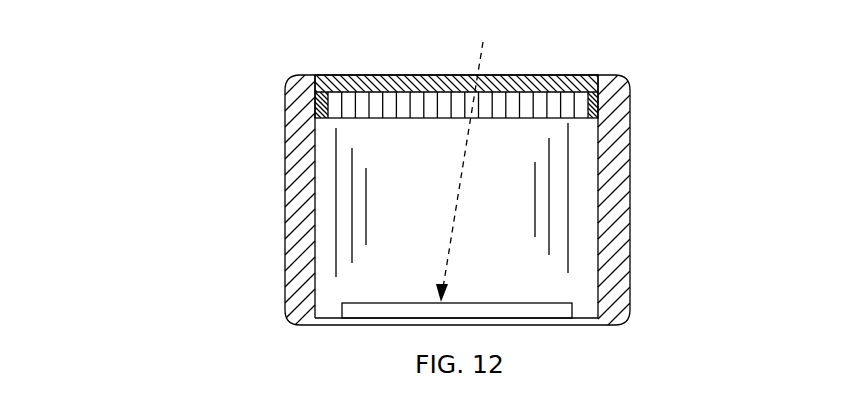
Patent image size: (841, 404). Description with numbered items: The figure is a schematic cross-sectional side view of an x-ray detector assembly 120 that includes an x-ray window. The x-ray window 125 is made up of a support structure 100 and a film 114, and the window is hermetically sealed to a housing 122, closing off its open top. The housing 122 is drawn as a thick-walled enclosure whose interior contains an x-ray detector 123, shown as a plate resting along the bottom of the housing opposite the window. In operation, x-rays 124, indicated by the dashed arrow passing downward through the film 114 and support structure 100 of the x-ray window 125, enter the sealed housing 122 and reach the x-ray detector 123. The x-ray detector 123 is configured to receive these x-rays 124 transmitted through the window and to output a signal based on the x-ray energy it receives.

The support structure 100 is at (320, 100).
The film 114 is at (328, 76).
The luminaire assembly 120 is at (134, 147).
The housing 122 is at (623, 92).
The x-ray detector 123 is at (535, 310).
The x-rays 124 is at (490, 61).
The x-ray window 125 is at (440, 50).